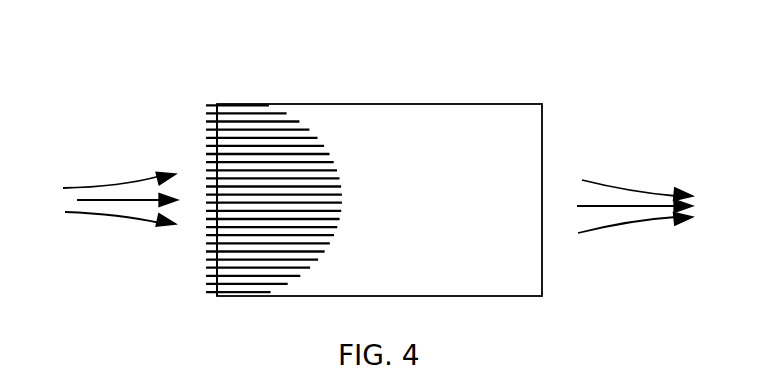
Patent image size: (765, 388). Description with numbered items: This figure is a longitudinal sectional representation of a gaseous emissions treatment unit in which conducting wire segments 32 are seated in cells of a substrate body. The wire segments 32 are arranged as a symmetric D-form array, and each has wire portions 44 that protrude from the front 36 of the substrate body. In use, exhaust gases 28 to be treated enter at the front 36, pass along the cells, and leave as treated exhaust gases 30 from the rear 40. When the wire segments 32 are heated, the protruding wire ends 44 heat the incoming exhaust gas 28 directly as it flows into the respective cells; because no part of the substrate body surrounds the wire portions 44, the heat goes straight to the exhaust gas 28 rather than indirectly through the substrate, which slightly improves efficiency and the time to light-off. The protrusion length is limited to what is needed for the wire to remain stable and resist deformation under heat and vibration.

The exhaust gases 28 is at (103, 203).
The treated exhaust gases 30 is at (643, 205).
The conducting wire segments 32 is at (265, 130).
The front 36 is at (209, 143).
The rear 40 is at (542, 137).
The wire portions 44 is at (214, 280).